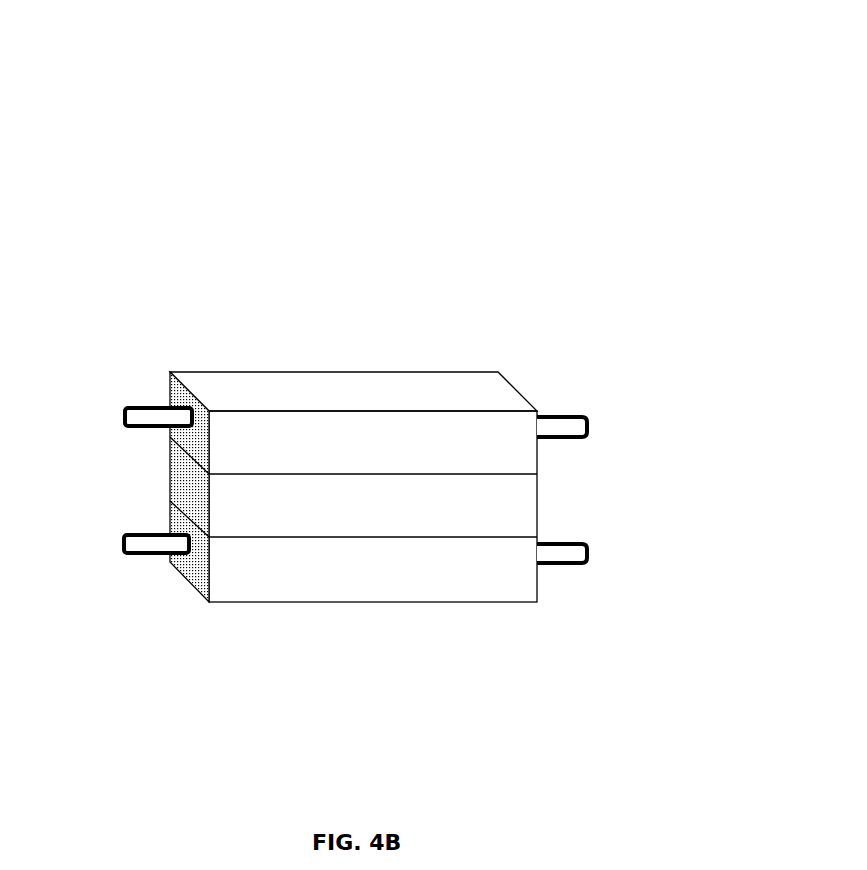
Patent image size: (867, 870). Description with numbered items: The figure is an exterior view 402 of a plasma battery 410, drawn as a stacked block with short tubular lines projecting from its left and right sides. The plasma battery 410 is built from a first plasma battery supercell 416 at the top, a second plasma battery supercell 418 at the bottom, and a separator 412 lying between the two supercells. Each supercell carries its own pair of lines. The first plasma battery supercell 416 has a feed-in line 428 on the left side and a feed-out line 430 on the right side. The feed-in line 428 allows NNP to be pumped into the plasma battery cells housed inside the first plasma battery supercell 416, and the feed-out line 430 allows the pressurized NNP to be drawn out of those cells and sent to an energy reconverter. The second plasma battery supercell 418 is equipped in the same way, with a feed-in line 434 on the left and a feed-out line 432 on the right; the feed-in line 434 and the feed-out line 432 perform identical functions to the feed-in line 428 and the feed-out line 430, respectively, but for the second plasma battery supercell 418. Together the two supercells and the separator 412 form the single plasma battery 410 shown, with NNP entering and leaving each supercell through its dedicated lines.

The exterior view 402 is at (346, 32).
The plasma battery 410 is at (353, 292).
The separator 412 is at (532, 513).
The first plasma battery supercell 416 is at (315, 385).
The second plasma battery supercell 418 is at (370, 602).
The feed-in line 428 is at (161, 407).
The feed-out line 430 is at (577, 412).
The feed-out line 432 is at (565, 564).
The feed-in line 434 is at (151, 553).